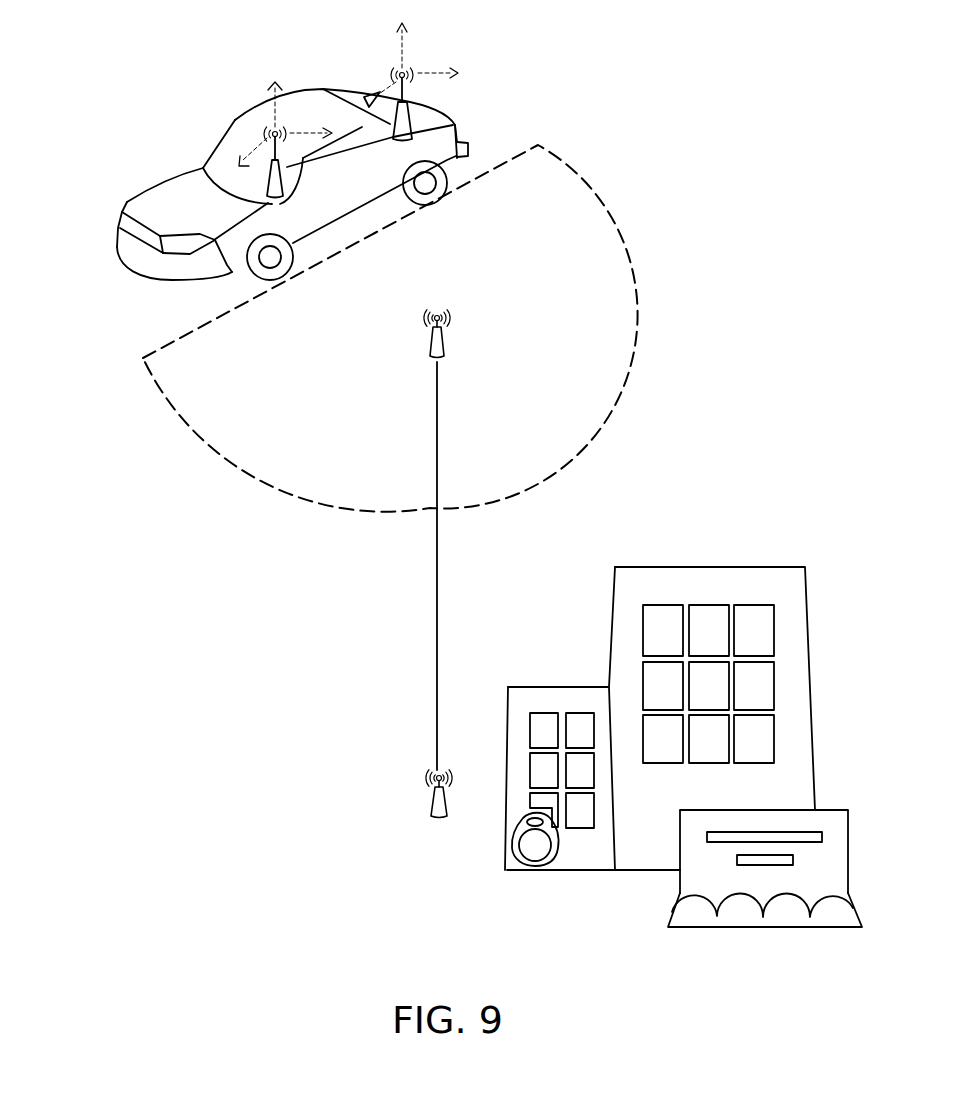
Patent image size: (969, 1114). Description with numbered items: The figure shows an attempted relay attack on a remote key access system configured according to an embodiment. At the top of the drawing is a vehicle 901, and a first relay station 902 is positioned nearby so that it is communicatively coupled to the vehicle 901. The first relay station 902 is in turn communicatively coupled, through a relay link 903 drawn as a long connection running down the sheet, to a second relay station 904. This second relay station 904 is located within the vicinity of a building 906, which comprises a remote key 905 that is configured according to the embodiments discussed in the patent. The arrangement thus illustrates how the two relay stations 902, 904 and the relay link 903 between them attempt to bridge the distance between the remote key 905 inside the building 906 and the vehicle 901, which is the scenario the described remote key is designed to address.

The vehicle 901 is at (148, 183).
The first relay station 902 is at (410, 331).
The relay link 903 is at (434, 604).
The second relay station 904 is at (424, 808).
The remote key 905 is at (512, 860).
The building 906 is at (632, 873).